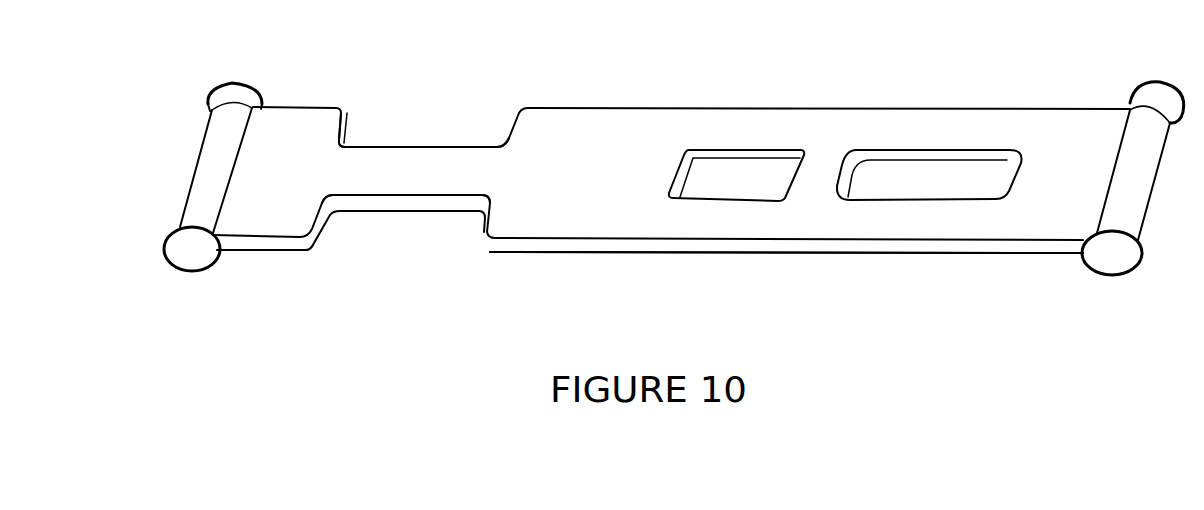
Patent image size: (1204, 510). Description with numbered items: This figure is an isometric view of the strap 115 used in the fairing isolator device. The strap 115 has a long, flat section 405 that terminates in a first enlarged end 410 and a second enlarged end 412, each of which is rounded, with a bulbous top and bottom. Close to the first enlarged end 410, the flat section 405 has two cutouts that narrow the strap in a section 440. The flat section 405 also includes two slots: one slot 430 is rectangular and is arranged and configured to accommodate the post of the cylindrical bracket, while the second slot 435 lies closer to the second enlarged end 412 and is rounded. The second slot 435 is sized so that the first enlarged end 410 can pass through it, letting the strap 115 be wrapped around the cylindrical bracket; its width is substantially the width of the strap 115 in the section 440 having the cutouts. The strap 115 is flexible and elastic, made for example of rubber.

The flat section 405 is at (805, 257).
The strap 115 is at (553, 258).
The section having the cutouts 440 is at (453, 140).
The slot 430 is at (728, 173).
The second slot 435 is at (908, 168).
The first enlarged end 410 is at (197, 156).
The second enlarged end 412 is at (1147, 233).